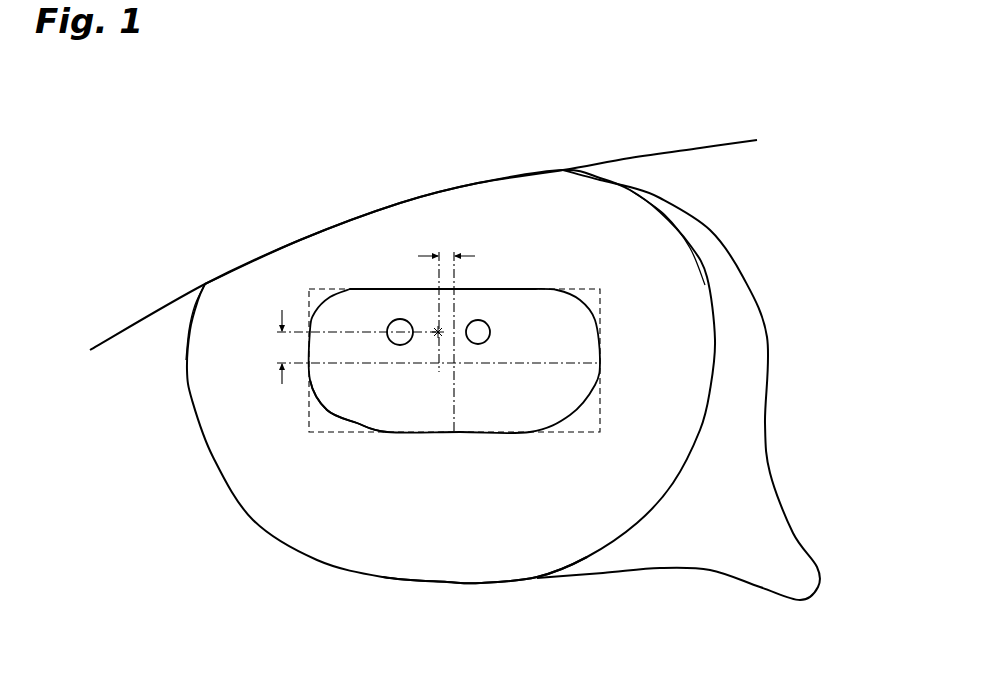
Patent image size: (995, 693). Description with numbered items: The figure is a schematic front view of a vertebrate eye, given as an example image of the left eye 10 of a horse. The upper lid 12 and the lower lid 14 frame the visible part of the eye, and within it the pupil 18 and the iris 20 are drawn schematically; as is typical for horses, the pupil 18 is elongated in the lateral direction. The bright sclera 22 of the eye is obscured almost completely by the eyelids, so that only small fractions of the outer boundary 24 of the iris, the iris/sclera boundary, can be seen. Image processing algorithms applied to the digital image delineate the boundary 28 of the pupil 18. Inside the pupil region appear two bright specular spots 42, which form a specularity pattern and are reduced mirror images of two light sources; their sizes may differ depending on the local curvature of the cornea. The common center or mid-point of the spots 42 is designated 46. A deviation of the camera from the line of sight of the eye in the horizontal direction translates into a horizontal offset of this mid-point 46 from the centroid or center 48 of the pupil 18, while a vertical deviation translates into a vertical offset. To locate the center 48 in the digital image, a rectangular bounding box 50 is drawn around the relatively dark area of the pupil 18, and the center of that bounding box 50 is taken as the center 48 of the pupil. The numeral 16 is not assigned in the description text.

The eye 10 is at (325, 135).
The upper lid 12 is at (475, 183).
The lower lid 14 is at (382, 577).
The mirror base arm 16 is at (753, 390).
The pupil 18 is at (507, 408).
The iris 20 is at (463, 553).
The sclera 22 is at (677, 225).
The outer boundary of the iris 24 is at (190, 300).
The boundary of the pupil 28 is at (327, 407).
The specular spots 42 is at (402, 317).
The mid-point of the spots 46 is at (438, 338).
The center of the pupil 48 is at (455, 364).
The bounding box 50 is at (347, 435).